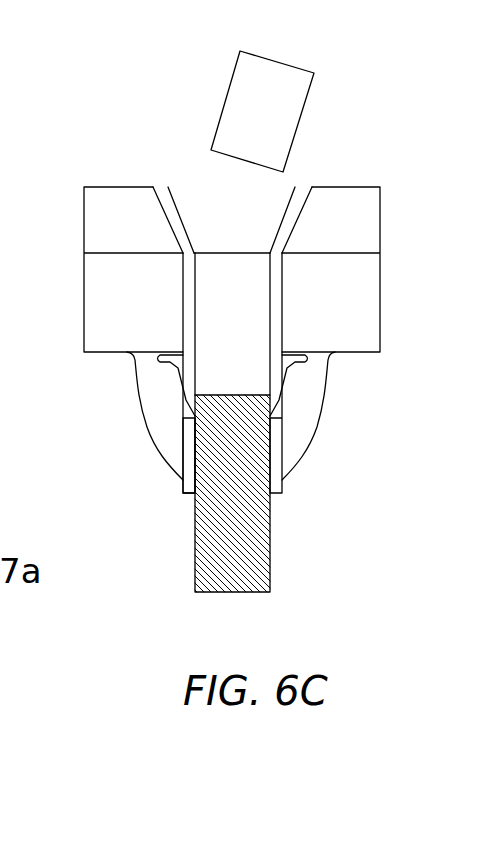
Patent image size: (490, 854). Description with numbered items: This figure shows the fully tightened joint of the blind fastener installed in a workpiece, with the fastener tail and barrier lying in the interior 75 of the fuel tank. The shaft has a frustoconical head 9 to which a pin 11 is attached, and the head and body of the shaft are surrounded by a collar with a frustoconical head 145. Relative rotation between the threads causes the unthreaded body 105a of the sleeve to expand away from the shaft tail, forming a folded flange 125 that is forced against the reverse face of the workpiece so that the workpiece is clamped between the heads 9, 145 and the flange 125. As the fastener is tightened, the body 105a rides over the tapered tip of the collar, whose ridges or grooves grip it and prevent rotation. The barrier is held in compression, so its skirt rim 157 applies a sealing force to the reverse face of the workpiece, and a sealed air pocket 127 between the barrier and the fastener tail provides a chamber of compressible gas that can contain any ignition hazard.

The pin 11 is at (278, 93).
The frustoconical head 9 is at (202, 215).
The frustoconical head of the collar 145 is at (295, 218).
The skirt rim 157 is at (131, 355).
The folded flange 125 is at (307, 368).
The sealed air pocket 127 is at (295, 427).
The unthreaded body of the sleeve 105a is at (178, 387).
The interior of the fuel tank 75 is at (166, 568).